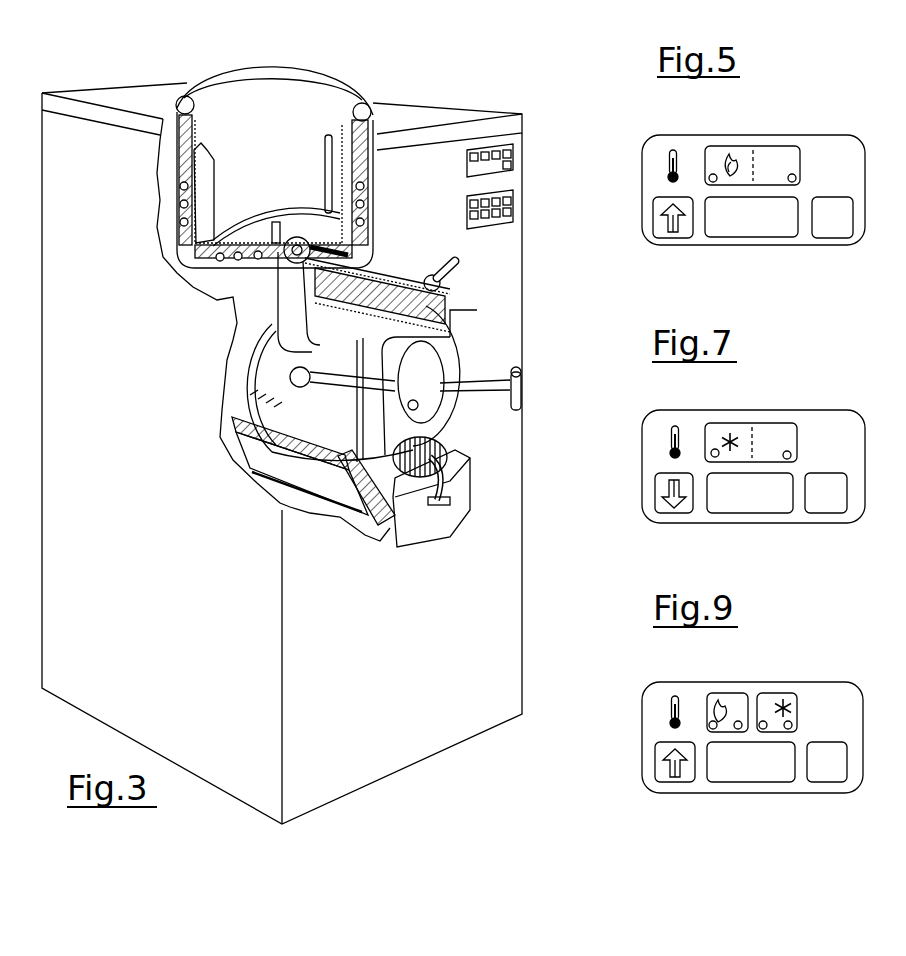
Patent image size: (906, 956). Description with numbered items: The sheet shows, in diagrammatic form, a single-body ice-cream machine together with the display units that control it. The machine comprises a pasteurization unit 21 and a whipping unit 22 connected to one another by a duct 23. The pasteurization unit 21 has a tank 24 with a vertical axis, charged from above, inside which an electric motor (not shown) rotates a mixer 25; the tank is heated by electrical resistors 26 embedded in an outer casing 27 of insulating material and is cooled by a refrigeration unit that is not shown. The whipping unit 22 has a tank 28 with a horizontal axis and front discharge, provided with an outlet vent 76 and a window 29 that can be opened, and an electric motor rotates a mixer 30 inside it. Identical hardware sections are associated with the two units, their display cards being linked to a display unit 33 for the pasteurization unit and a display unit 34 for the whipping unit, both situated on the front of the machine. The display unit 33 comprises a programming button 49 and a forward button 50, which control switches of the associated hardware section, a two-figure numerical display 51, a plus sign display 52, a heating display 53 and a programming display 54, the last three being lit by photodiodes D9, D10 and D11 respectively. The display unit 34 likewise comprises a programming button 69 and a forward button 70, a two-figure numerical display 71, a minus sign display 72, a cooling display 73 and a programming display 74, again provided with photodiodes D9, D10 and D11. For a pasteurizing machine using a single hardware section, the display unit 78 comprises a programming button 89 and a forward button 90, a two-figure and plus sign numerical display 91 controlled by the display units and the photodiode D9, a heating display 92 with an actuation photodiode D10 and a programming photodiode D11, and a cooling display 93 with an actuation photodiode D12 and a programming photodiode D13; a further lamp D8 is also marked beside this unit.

In FIG. 3, the pasteurization unit 21 is at (390, 180).
In FIG. 3, the whipping unit 22 is at (306, 512).
In FIG. 3, the duct 23 is at (287, 282).
In FIG. 3, the tank 24 is at (310, 93).
In FIG. 3, the mixer 25 is at (210, 190).
In FIG. 3, the electrical resistors 26 is at (182, 223).
In FIG. 3, the outer casing 27 is at (183, 157).
In FIG. 3, the tank 28 is at (323, 417).
In FIG. 3, the window 29 is at (473, 357).
In FIG. 3, the mixer 30 is at (418, 370).
In FIG. 3, the outlet vent 76 is at (453, 443).
In FIG. 5, the display unit 33 is at (636, 238).
In FIG. 7, the display unit 34 is at (636, 479).
In FIG. 5, the programming button 49 is at (840, 232).
In FIG. 5, the forward button 50 is at (687, 230).
In FIG. 5, the two-figure numerical display 51 is at (777, 230).
In FIG. 5, the plus sign display 52 is at (738, 220).
In FIG. 5, the heating display 53 is at (742, 150).
In FIG. 5, the programming display 54 is at (793, 150).
In FIG. 7, the programming button 69 is at (832, 507).
In FIG. 7, the forward button 70 is at (685, 510).
In FIG. 7, the two figure numerical display 71 is at (777, 493).
In FIG. 7, the minus sign display 72 is at (738, 500).
In FIG. 7, the cooling display 73 is at (731, 432).
In FIG. 7, the programming display 74 is at (772, 427).
In FIG. 9, the display unit 78 is at (782, 672).
In FIG. 9, the programming button 89 is at (832, 773).
In FIG. 9, the forward button 90 is at (663, 778).
In FIG. 9, the two-figure and plus sign numerical display 91 is at (728, 778).
In FIG. 9, the heating display 92 is at (728, 698).
In FIG. 9, the cooling display 93 is at (793, 698).
In FIG. 9, the indicator lamp D8 is at (897, 735).
In FIG. 5, the photodiode D9 is at (740, 222).
In FIG. 7, the photodiode D9 is at (730, 490).
In FIG. 9, the photodiode D9 is at (725, 765).
In FIG. 5, the photodiode D10 is at (711, 175).
In FIG. 7, the photodiode D10 is at (713, 450).
In FIG. 5, the photodiode D11 is at (796, 178).
In FIG. 7, the photodiode D11 is at (791, 455).
In FIG. 9, the photodiode D11 is at (739, 721).
In FIG. 9, the actuation photodiode D12 is at (711, 722).
In FIG. 9, the programming photodiode D13 is at (764, 721).